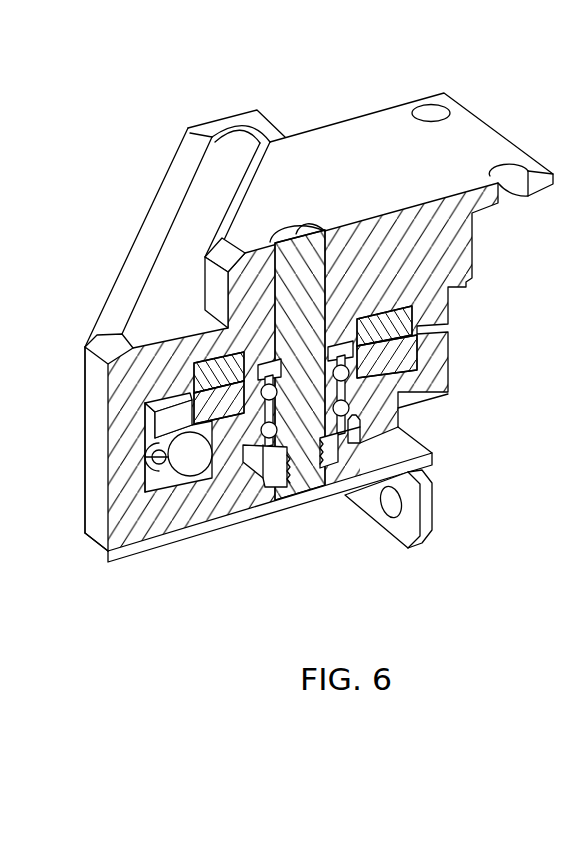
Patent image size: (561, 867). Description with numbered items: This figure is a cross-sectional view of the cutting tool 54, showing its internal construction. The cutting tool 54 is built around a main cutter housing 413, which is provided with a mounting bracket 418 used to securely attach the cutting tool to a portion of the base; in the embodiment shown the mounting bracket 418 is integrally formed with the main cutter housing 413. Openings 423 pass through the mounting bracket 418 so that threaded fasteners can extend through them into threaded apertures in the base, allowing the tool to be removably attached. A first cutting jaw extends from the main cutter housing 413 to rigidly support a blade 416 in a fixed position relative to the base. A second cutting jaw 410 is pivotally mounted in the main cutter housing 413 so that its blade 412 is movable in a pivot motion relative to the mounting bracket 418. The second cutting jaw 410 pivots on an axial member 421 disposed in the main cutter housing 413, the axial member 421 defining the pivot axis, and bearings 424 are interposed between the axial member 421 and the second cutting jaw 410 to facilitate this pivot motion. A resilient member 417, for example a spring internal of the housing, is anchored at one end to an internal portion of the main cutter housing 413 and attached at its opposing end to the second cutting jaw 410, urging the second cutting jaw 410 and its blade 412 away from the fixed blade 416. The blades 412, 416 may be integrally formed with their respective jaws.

The cutting tool 54 is at (140, 596).
The second cutting jaw 410 is at (440, 370).
The blade 412 is at (407, 352).
The main cutter housing 413 is at (140, 158).
The blade 416 is at (402, 320).
The resilient member 417 is at (157, 477).
The mounting bracket 418 is at (368, 137).
The axial member 421 is at (308, 226).
The openings 423 is at (428, 112).
The bearings 424 is at (279, 400).